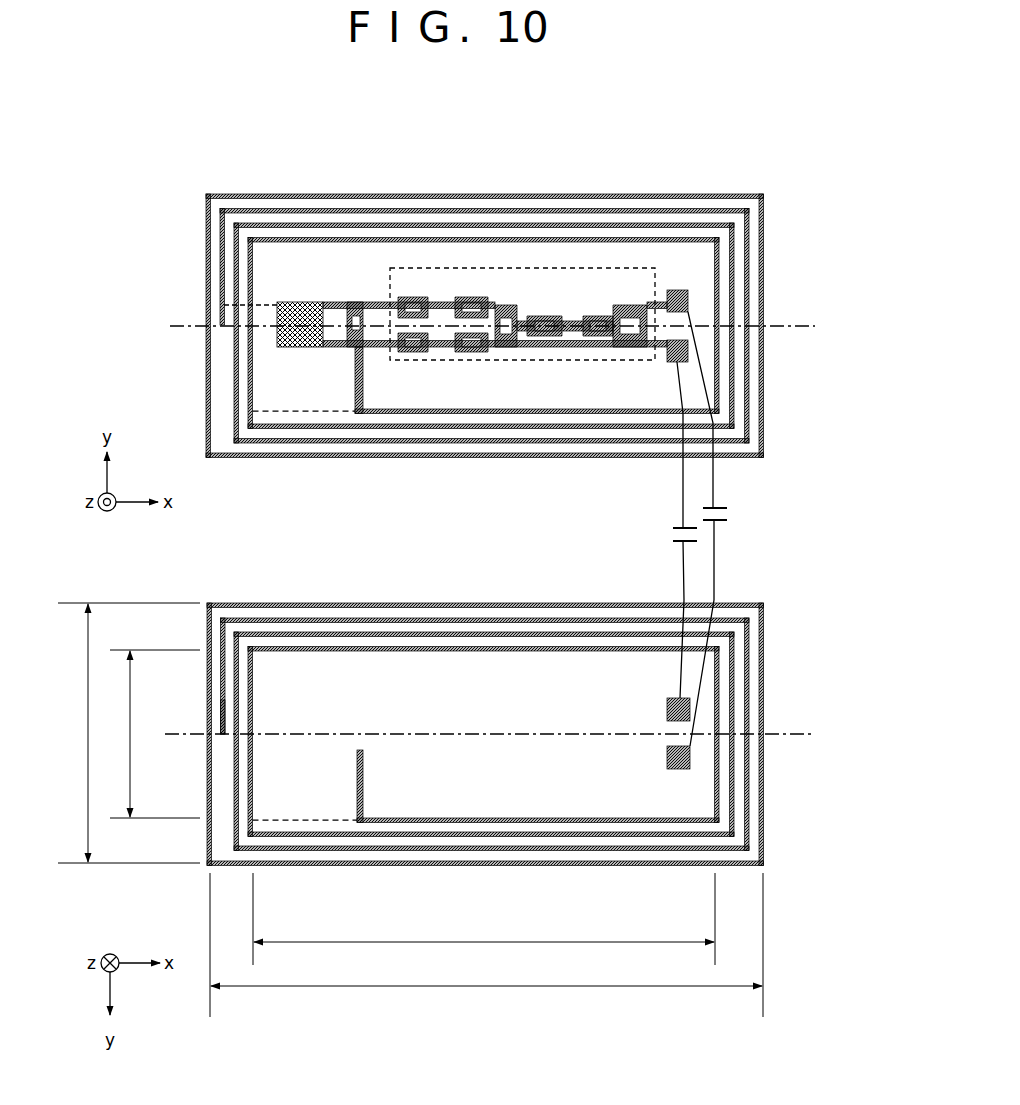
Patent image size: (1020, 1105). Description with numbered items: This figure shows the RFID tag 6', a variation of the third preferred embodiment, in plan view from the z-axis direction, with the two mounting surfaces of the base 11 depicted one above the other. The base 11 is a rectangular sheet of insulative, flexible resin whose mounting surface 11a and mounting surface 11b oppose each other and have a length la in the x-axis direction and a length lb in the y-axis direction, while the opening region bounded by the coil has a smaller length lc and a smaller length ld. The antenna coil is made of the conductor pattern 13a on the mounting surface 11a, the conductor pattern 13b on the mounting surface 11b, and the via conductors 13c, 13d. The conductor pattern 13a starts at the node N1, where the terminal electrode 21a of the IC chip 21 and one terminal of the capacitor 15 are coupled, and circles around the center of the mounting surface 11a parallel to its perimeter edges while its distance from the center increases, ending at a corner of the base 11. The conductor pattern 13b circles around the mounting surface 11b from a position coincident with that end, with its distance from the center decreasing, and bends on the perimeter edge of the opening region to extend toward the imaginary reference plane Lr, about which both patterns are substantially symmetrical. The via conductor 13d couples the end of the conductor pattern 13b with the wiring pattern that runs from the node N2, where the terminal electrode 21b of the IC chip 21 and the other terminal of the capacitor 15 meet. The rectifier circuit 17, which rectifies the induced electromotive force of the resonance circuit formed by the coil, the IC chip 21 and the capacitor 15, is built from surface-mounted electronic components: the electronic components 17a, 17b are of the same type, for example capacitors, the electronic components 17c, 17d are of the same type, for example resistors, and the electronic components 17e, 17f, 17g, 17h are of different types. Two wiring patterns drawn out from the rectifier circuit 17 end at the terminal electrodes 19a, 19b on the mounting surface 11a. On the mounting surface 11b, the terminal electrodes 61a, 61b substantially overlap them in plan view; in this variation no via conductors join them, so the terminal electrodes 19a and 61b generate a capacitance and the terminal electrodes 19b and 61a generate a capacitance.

The RFID tag 6' is at (171, 128).
The base 11 is at (779, 213).
The mounting surface 11a is at (653, 250).
The mounting surface 11b is at (466, 660).
The conductor pattern 13a is at (332, 196).
The conductor pattern 13b is at (331, 605).
The via conductor 13c is at (221, 740).
The via conductor 13d is at (366, 762).
The capacitor 15 is at (345, 350).
The rectifier circuit 17 is at (584, 268).
The electronic component 17a is at (413, 297).
The electronic component 17b is at (413, 352).
The electronic component 17c is at (471, 297).
The electronic component 17d is at (470, 352).
The electronic component 17e is at (515, 347).
The electronic component 17f is at (545, 336).
The electronic component 17g is at (598, 336).
The electronic component 17h is at (630, 347).
The terminal electrode 19a is at (688, 303).
The terminal electrode 19b is at (688, 352).
The IC chip 21 is at (212, 306).
The terminal electrode 21a is at (300, 348).
The terminal electrode 21b is at (300, 303).
The terminal electrode 61a is at (690, 712).
The terminal electrode 61b is at (690, 760).
The node N1 is at (360, 345).
The node N2 is at (350, 300).
The reference plane Lr is at (500, 531).
The length la is at (128, 733).
The length lb is at (486, 945).
The length lc is at (155, 734).
The length ld is at (484, 919).